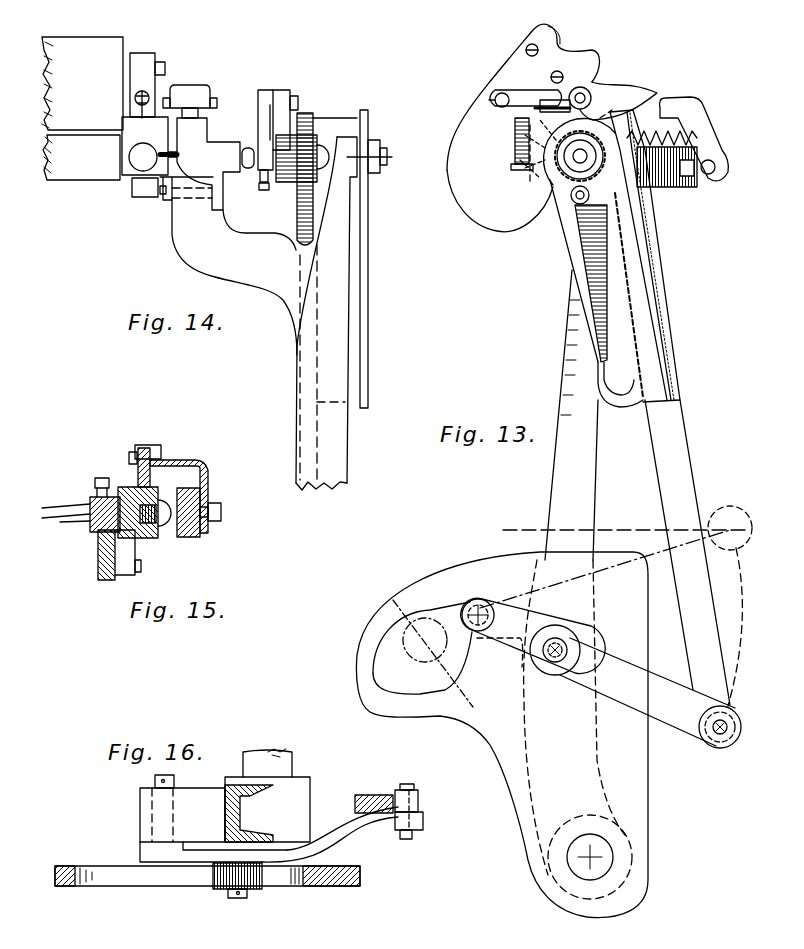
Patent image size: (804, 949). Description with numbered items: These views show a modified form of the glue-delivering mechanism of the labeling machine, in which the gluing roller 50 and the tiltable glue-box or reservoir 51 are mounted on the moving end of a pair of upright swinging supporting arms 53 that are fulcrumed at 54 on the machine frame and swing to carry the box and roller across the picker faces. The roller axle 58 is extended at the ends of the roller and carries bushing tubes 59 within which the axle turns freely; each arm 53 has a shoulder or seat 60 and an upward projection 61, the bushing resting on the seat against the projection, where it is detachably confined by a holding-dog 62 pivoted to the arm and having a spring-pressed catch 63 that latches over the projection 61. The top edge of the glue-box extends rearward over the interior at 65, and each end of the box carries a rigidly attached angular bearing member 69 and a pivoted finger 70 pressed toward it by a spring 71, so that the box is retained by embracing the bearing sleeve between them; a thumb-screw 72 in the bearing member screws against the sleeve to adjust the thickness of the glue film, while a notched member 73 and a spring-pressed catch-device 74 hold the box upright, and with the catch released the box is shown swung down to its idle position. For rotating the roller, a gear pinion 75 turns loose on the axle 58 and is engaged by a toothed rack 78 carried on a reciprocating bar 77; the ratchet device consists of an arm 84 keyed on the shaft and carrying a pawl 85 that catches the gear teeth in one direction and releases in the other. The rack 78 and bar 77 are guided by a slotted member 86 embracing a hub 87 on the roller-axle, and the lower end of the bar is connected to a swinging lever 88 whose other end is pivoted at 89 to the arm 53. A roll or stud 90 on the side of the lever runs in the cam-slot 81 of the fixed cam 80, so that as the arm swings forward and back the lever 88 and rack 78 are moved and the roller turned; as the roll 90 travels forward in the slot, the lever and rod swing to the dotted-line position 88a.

In FIG. 14, the gluing roller 50 is at (81, 157).
In FIG. 14, the glue-box 51 is at (103, 83).
In FIG. 13, the glue-box 51 is at (482, 208).
In FIG. 14, the swinging supporting arms 53 is at (200, 250).
In FIG. 15, the swinging supporting arms 53 is at (185, 530).
In FIG. 16, the swinging supporting arms 53 is at (267, 809).
In FIG. 13, the swinging supporting arms 53 is at (660, 172).
In FIG. 16, the fulcrum 54 is at (260, 768).
In FIG. 13, the fulcrum 54 is at (578, 863).
In FIG. 14, the roller axle 58 is at (248, 168).
In FIG. 15, the roller axle 58 is at (80, 514).
In FIG. 14, the bushing tubes 59 is at (226, 148).
In FIG. 14, the shoulder or seat 60 is at (182, 202).
In FIG. 13, the upward projection 61 is at (601, 106).
In FIG. 14, the holding-dog 62 is at (202, 132).
In FIG. 13, the holding-dog 62 is at (536, 166).
In FIG. 14, the spring-pressed catch 63 is at (194, 102).
In FIG. 13, the spring-pressed catch 63 is at (628, 100).
In FIG. 13, the rearwardly extending top edge 65 is at (470, 122).
In FIG. 14, the angular bearing member 69 is at (149, 146).
In FIG. 14, the spring pressed finger 70 is at (146, 190).
In FIG. 13, the spring pressed finger 70 is at (525, 102).
In FIG. 14, the spring 71 is at (150, 92).
In FIG. 13, the spring 71 is at (516, 140).
In FIG. 14, the thumb-screw 72 is at (138, 162).
In FIG. 13, the notched member 73 is at (572, 50).
In FIG. 13, the spring pressed catch-device 74 is at (690, 130).
In FIG. 14, the gear pinion 75 is at (300, 156).
In FIG. 15, the gear pinion 75 is at (122, 484).
In FIG. 13, the gear pinion 75 is at (617, 190).
In FIG. 14, the reciprocating bar 77 is at (326, 327).
In FIG. 15, the reciprocating bar 77 is at (142, 448).
In FIG. 16, the reciprocating bar 77 is at (378, 798).
In FIG. 13, the reciprocating bar 77 is at (680, 478).
In FIG. 14, the toothed rack 78 is at (300, 210).
In FIG. 15, the toothed rack 78 is at (135, 482).
In FIG. 13, the toothed rack 78 is at (632, 297).
In FIG. 16, the fixed cam 80 is at (315, 880).
In FIG. 13, the fixed cam 80 is at (440, 702).
In FIG. 13, the cam-slot 81 is at (529, 635).
In FIG. 14, the arm 84 is at (266, 104).
In FIG. 15, the arm 84 is at (104, 556).
In FIG. 14, the pawl 85 is at (282, 108).
In FIG. 15, the pawl 85 is at (128, 552).
In FIG. 13, the pawl 85 is at (560, 94).
In FIG. 14, the slotted member 86 is at (380, 270).
In FIG. 15, the slotted member 86 is at (210, 480).
In FIG. 13, the slotted member 86 is at (600, 378).
In FIG. 14, the hub 87 is at (370, 149).
In FIG. 15, the hub 87 is at (215, 528).
In FIG. 16, the swinging lever 88 is at (365, 828).
In FIG. 13, the swinging lever 88 is at (681, 722).
In FIG. 13, the relative position of lever 88a is at (623, 596).
In FIG. 16, the pivot 89 is at (164, 848).
In FIG. 13, the pivot 89 is at (476, 606).
In FIG. 16, the roll or stud 90 is at (232, 872).
In FIG. 13, the roll or stud 90 is at (556, 675).